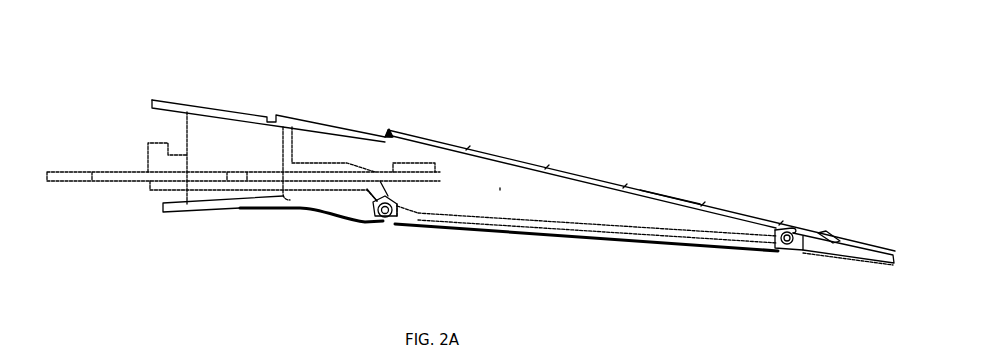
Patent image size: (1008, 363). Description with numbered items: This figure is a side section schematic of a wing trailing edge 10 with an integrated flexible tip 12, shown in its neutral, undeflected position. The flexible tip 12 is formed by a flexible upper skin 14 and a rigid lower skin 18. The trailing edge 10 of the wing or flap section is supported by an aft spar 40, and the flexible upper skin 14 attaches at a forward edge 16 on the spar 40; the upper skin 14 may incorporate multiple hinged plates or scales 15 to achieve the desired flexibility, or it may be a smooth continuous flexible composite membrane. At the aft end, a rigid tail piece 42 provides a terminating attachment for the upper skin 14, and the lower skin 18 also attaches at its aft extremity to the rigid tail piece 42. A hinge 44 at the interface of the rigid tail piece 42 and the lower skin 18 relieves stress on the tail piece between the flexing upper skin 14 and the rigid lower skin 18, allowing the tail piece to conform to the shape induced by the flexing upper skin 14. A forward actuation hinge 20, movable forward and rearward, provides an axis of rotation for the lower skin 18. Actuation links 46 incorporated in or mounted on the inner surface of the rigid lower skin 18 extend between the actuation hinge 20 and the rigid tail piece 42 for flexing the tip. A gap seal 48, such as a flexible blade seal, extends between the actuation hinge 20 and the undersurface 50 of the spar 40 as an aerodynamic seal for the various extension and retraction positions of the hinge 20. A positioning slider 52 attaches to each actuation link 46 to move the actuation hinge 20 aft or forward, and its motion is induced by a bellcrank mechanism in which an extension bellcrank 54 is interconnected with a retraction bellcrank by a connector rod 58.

The wing trailing edge 10 is at (358, 107).
The flexible tip 12 is at (500, 190).
The flexible upper skin 14 is at (600, 178).
The hinged plates or scales 15 is at (678, 197).
The forward edge 16 is at (390, 130).
The rigid lower skin 18 is at (595, 242).
The forward actuation hinge 20 is at (387, 218).
The aft spar 40 is at (273, 117).
The rigid tail piece 42 is at (857, 255).
The hinge 44 is at (787, 245).
The actuation links 46 is at (592, 217).
The gap seal 48 is at (313, 212).
The undersurface 50 is at (170, 213).
The positioning slider 52 is at (323, 167).
The extension bellcrank 54 is at (203, 177).
The connector rod 58 is at (416, 163).